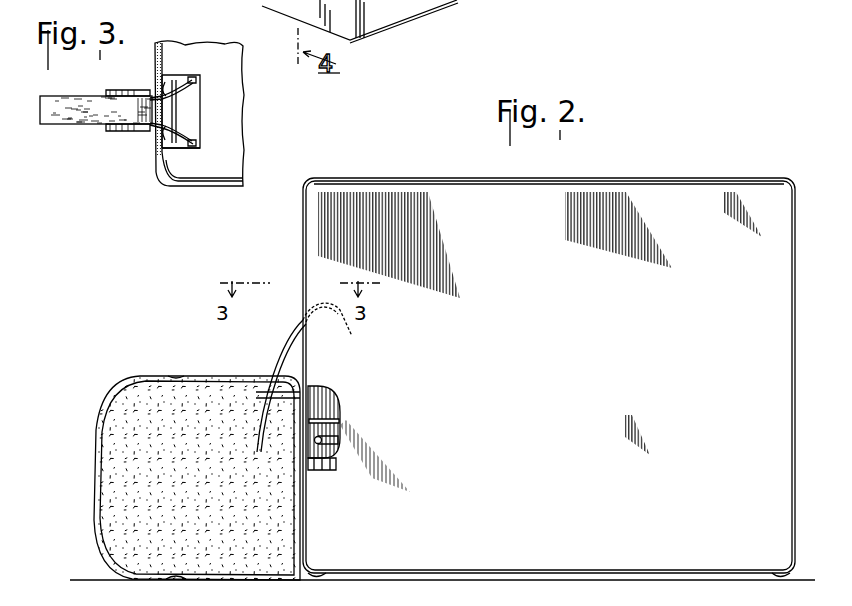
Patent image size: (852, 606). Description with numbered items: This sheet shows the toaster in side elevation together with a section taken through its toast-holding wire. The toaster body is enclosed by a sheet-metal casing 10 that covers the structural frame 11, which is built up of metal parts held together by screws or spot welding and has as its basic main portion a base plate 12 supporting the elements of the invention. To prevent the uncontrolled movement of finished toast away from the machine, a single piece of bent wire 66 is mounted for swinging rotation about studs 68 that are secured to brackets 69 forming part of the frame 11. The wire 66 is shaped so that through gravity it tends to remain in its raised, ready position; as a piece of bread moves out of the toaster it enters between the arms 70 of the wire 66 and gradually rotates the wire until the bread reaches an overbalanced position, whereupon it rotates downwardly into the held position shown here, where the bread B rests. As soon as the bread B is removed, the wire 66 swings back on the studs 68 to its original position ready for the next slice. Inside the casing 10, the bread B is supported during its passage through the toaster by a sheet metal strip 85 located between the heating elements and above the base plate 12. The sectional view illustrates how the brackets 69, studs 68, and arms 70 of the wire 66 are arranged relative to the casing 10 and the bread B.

In FIG. 3, the casing 10 is at (230, 120).
In FIG. 2, the casing 10 is at (442, 379).
In FIG. 3, the frame 11 is at (158, 74).
In FIG. 2, the frame 11 is at (322, 398).
In FIG. 2, the base plate 12 is at (322, 470).
In FIG. 3, the wire 66 is at (152, 143).
In FIG. 2, the wire 66 is at (279, 350).
In FIG. 3, the studs 68 is at (200, 98).
In FIG. 2, the studs 68 is at (337, 330).
In FIG. 3, the brackets 69 is at (172, 152).
In FIG. 3, the arms 70 is at (132, 89).
In FIG. 2, the arms 70 is at (260, 396).
In FIG. 2, the sheet metal strip 85 is at (330, 440).
In FIG. 3, the bread B is at (76, 104).
In FIG. 2, the bread B is at (196, 376).